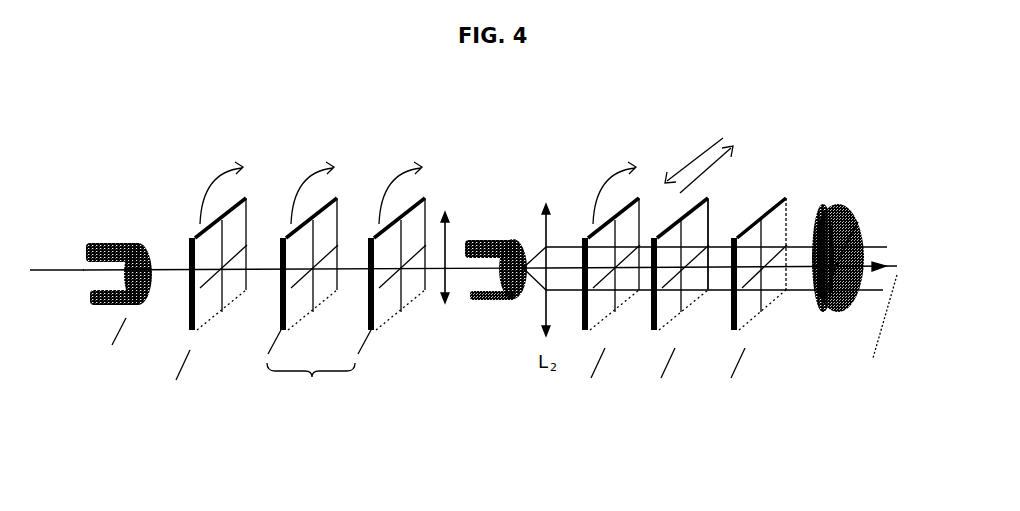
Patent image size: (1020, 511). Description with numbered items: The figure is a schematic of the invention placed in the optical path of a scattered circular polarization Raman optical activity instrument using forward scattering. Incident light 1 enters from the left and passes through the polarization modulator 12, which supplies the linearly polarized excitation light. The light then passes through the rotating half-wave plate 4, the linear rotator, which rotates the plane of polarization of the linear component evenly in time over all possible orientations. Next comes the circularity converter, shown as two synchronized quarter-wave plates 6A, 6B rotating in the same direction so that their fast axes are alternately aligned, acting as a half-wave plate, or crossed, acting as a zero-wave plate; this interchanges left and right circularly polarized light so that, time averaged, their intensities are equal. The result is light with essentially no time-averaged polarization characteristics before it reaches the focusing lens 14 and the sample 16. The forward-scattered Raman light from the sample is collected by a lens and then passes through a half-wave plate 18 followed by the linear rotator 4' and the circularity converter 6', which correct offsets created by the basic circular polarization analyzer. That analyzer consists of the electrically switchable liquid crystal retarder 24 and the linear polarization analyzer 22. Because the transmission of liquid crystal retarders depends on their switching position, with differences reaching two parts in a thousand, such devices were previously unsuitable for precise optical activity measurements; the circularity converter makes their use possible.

The light beam / optical system 1 is at (37, 264).
The polarization modulator 12 is at (112, 234).
The rotating half-wave plate (linear rotator) 4 is at (229, 269).
The circular compensator CC1 first quarter-wave plate 6A is at (337, 199).
The circular compensator CC1 second quarter-wave plate 6B is at (428, 197).
The focusing lens 14 is at (447, 211).
The sample 16 is at (488, 233).
The linear retarder LR2 (half-wave plate) 18 is at (545, 199).
The linear rotator 4' is at (685, 269).
The circularity converter 6' is at (744, 199).
The electrically switchable liquid crystal retarder 24 is at (783, 201).
The linear polarization analyzer 22 is at (847, 201).